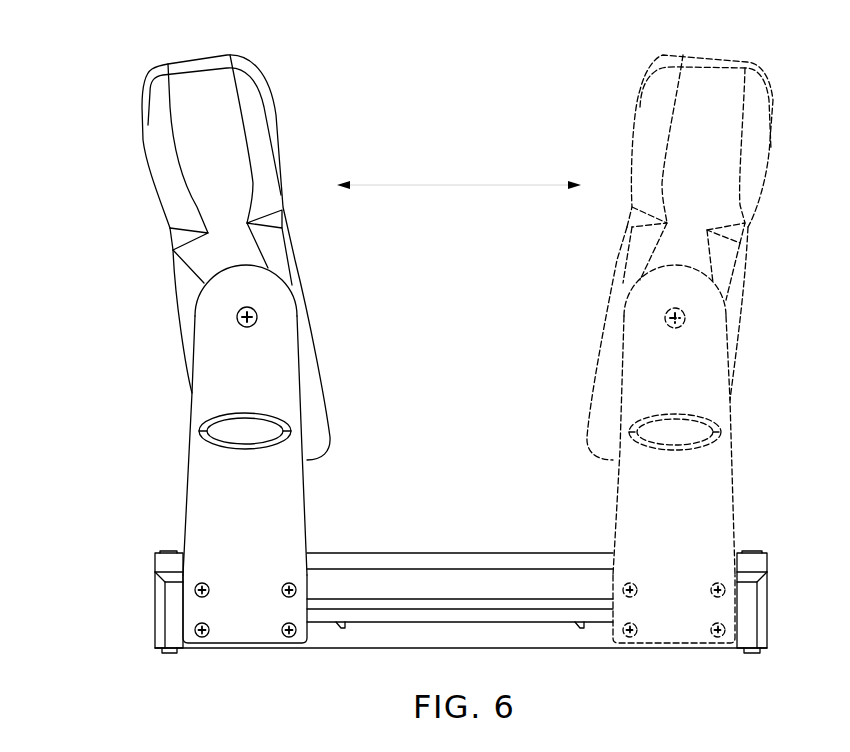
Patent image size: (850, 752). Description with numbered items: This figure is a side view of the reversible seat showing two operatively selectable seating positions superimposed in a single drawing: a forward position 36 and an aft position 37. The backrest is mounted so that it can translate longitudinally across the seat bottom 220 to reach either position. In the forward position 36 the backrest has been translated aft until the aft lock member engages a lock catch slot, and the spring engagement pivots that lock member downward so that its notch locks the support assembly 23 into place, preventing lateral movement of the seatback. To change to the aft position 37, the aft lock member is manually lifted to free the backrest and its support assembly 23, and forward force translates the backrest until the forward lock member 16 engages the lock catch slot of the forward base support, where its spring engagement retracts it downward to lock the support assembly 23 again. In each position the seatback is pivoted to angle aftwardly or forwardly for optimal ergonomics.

The forward position 36 is at (312, 151).
The aft position 37 is at (603, 151).
The seat bottom 220 is at (466, 533).
The support assembly 23 is at (241, 638).
The forward lock member 16 is at (155, 600).